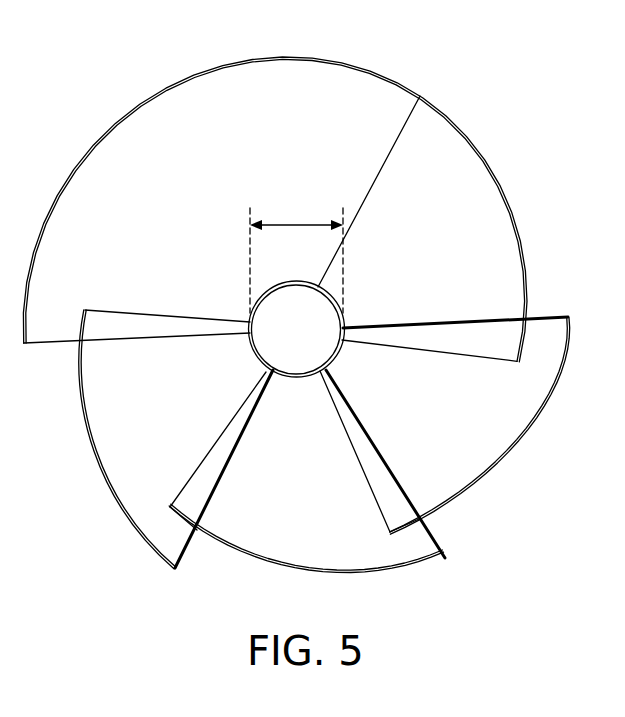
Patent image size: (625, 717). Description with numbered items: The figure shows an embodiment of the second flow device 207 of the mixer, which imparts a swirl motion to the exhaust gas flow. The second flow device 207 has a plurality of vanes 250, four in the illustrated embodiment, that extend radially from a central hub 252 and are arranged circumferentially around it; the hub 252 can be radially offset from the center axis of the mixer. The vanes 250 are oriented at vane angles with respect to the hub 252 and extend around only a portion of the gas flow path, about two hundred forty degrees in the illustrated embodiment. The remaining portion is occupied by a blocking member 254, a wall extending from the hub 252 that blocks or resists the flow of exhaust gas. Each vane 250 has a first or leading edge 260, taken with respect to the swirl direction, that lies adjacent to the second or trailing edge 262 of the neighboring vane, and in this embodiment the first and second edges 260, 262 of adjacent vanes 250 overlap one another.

The second flow device 207 is at (478, 49).
The vanes 250 is at (488, 245).
The central hub 252 is at (283, 342).
The blocking member 254 is at (138, 153).
The first or leading edge 260 is at (435, 538).
The second or trailing edge 262 is at (205, 457).